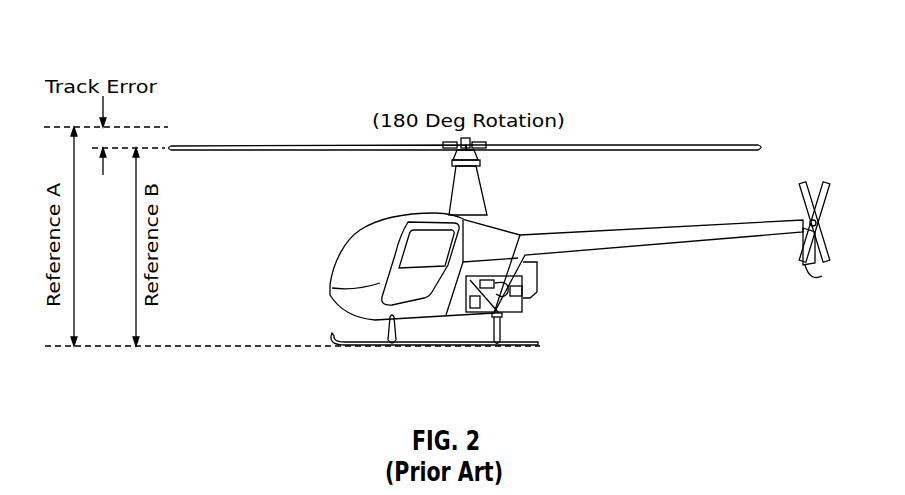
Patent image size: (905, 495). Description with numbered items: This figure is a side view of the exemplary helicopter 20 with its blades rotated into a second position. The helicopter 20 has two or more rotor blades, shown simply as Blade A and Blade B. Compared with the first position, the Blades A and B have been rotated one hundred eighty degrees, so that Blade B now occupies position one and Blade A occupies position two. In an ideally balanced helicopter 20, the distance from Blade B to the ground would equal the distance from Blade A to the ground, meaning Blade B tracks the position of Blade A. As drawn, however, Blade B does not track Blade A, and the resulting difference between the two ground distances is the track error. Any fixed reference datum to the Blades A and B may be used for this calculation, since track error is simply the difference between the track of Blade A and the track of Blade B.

The helicopter 20 is at (199, 44).
The Blade A is at (746, 145).
The Blade B is at (200, 145).